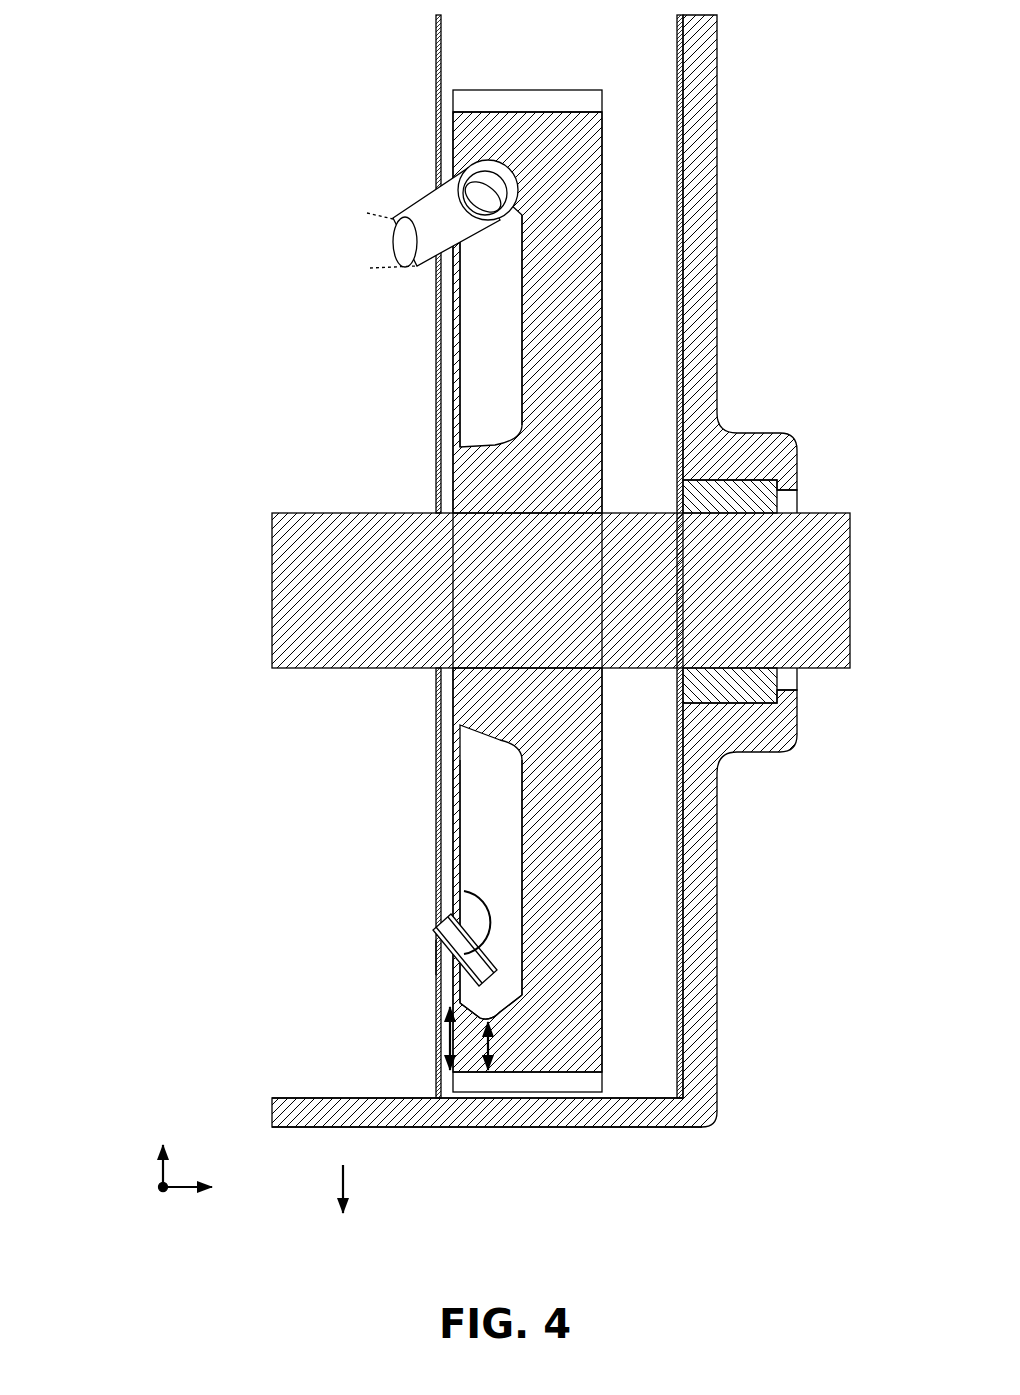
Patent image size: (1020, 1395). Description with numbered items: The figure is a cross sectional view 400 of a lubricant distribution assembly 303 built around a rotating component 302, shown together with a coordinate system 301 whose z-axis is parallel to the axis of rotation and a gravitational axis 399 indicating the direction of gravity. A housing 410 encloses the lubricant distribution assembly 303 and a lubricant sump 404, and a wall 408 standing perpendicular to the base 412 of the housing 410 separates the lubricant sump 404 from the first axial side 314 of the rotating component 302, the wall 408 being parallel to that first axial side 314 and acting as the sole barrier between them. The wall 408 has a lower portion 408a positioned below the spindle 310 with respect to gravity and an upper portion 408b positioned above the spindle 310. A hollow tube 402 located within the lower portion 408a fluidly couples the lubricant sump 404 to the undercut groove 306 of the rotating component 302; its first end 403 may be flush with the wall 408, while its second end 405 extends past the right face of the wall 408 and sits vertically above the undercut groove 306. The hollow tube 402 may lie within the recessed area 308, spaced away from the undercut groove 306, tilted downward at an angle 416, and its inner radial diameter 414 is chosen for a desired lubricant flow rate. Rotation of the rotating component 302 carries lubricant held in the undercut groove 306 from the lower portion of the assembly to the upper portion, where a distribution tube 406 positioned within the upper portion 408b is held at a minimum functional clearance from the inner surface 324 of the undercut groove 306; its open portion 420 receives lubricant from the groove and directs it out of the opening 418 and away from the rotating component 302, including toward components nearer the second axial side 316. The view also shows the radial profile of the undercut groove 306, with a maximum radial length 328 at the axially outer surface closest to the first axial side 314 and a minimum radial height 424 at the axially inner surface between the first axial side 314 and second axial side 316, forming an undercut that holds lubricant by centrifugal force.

The cross sectional view 400 is at (160, 93).
The rotating component 302 is at (520, 68).
The inner surface 324 is at (500, 168).
The opening 418 is at (503, 183).
The open portion 420 is at (458, 200).
The distribution tube 406 is at (412, 237).
The second axial side 316 is at (620, 249).
The lubricant distribution assembly 303 is at (215, 260).
The upper portion 408b is at (437, 301).
The recessed area 308 is at (497, 400).
The first axial side 314 is at (222, 433).
The wall 408 is at (125, 560).
The spindle 310 is at (275, 603).
The lower portion 408a is at (435, 810).
The angle 416 is at (485, 898).
The hollow tube 402 is at (437, 958).
The first end 403 is at (425, 918).
The inner radial diameter 414 is at (447, 933).
The second end 405 is at (498, 986).
The lubricant sump 404 is at (190, 992).
The maximum radial length 328 is at (448, 1028).
The undercut groove 306 is at (497, 1003).
The minimum radial height 424 is at (490, 1056).
The housing 410 is at (745, 1100).
The coordinate system 301 is at (122, 1135).
The gravitational axis 399 is at (343, 1186).
The base 412 is at (520, 1127).